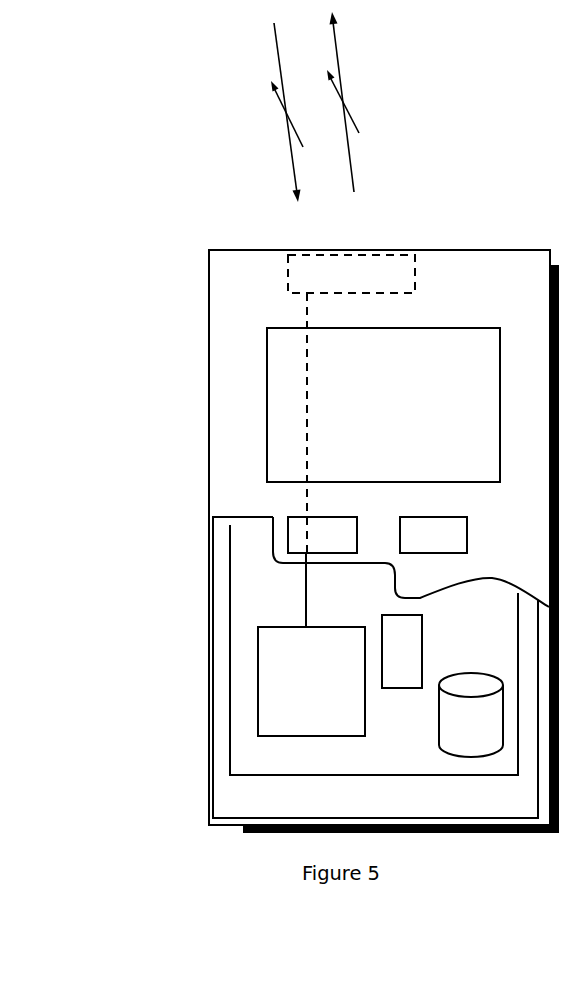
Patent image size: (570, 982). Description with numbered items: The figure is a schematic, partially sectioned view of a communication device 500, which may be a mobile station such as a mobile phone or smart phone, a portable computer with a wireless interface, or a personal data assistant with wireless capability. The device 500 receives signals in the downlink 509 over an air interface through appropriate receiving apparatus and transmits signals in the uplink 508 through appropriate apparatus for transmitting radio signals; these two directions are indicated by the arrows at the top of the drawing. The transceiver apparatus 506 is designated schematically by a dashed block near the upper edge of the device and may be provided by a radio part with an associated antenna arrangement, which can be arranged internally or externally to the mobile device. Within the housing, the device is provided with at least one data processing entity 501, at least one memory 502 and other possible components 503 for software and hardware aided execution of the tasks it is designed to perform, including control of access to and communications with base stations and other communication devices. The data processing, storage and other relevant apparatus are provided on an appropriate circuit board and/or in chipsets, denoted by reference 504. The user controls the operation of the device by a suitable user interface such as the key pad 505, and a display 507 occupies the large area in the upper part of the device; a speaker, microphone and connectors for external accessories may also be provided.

The communication device 500 is at (209, 297).
The data processing entity 501 is at (267, 662).
The memory 502 is at (463, 728).
The other possible components 503 is at (403, 635).
The circuit board and/or chipset apparatus 504 is at (257, 757).
The key pad 505 is at (295, 533).
The transceiver apparatus 506 is at (405, 270).
The display 507 is at (288, 390).
The uplink 508 is at (355, 95).
The downlink 509 is at (290, 70).